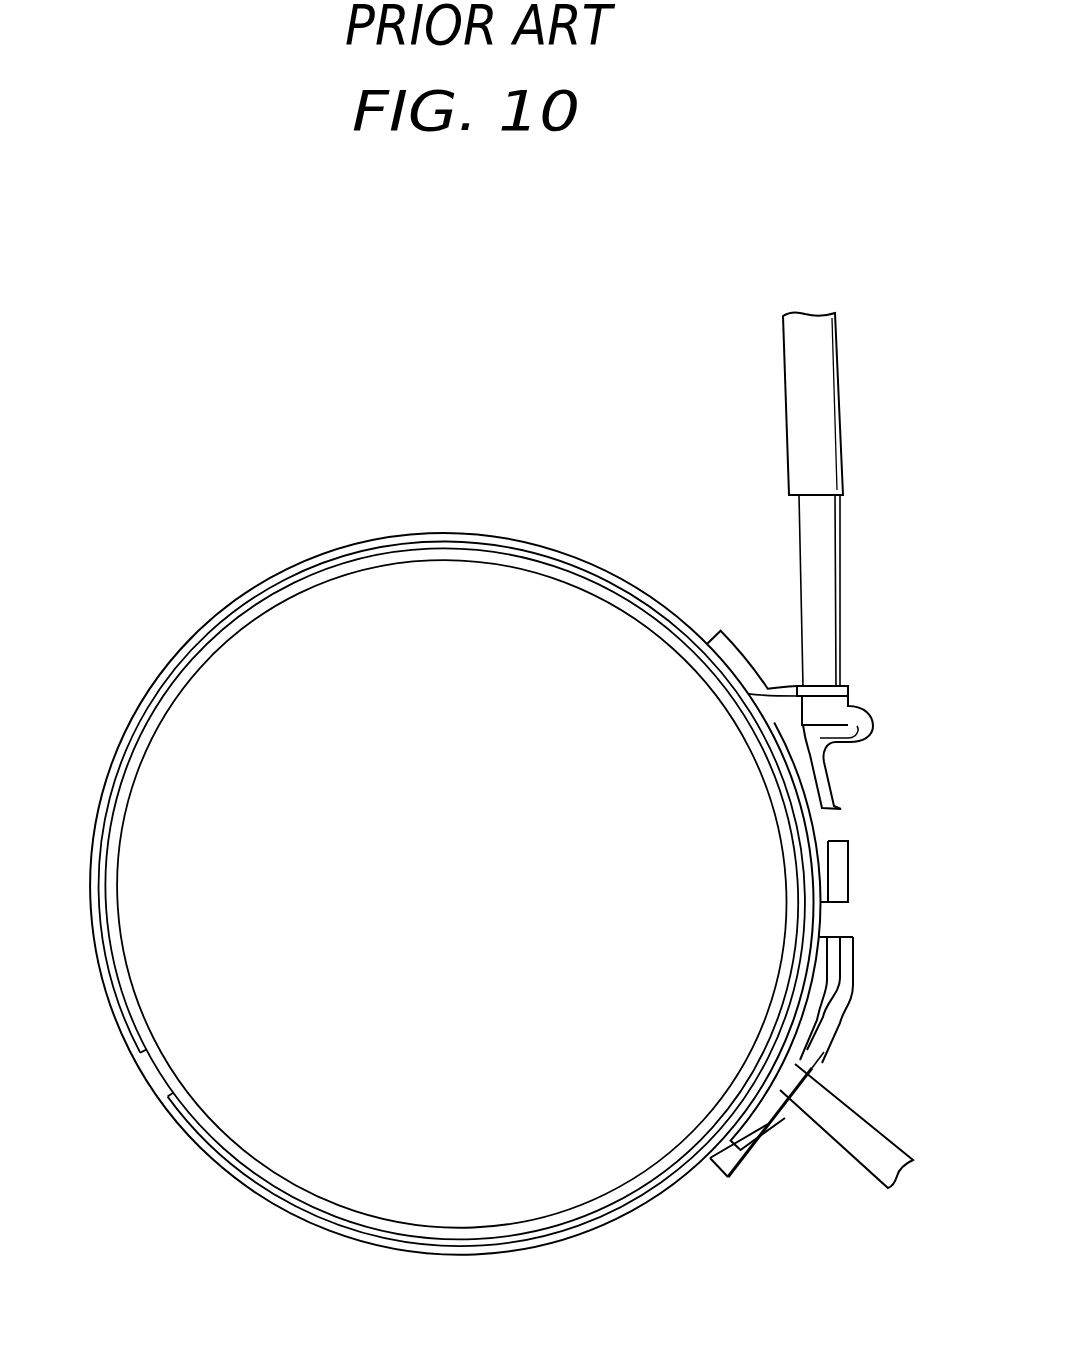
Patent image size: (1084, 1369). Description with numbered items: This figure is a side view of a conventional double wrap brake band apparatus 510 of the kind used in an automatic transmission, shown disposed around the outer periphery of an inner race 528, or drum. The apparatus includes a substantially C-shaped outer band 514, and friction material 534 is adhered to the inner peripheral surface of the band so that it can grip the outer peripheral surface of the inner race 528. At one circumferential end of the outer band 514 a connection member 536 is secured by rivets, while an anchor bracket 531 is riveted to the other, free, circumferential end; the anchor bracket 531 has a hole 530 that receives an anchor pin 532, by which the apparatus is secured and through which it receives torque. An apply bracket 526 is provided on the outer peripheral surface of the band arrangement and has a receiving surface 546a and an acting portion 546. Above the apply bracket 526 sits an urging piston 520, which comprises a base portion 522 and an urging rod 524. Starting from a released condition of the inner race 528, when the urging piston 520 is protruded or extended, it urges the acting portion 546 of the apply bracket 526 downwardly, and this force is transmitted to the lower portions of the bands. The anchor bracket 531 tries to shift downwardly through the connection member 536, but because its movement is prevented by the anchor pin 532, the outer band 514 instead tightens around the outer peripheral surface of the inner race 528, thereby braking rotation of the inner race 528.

The double wrap brake band apparatus 510 is at (517, 370).
The outer band 514 is at (646, 583).
The urging piston 520 is at (820, 296).
The base portion 522 is at (833, 368).
The urging rod 524 is at (836, 552).
The apply bracket 526 is at (838, 778).
The inner race 528 is at (398, 582).
The hole 530 is at (826, 1058).
The anchor bracket 531 is at (860, 944).
The anchor pin 532 is at (822, 1128).
The friction material 534 is at (528, 548).
The connection member 536 is at (850, 878).
The acting portion 546 is at (872, 727).
The receiving surface 546a is at (848, 686).